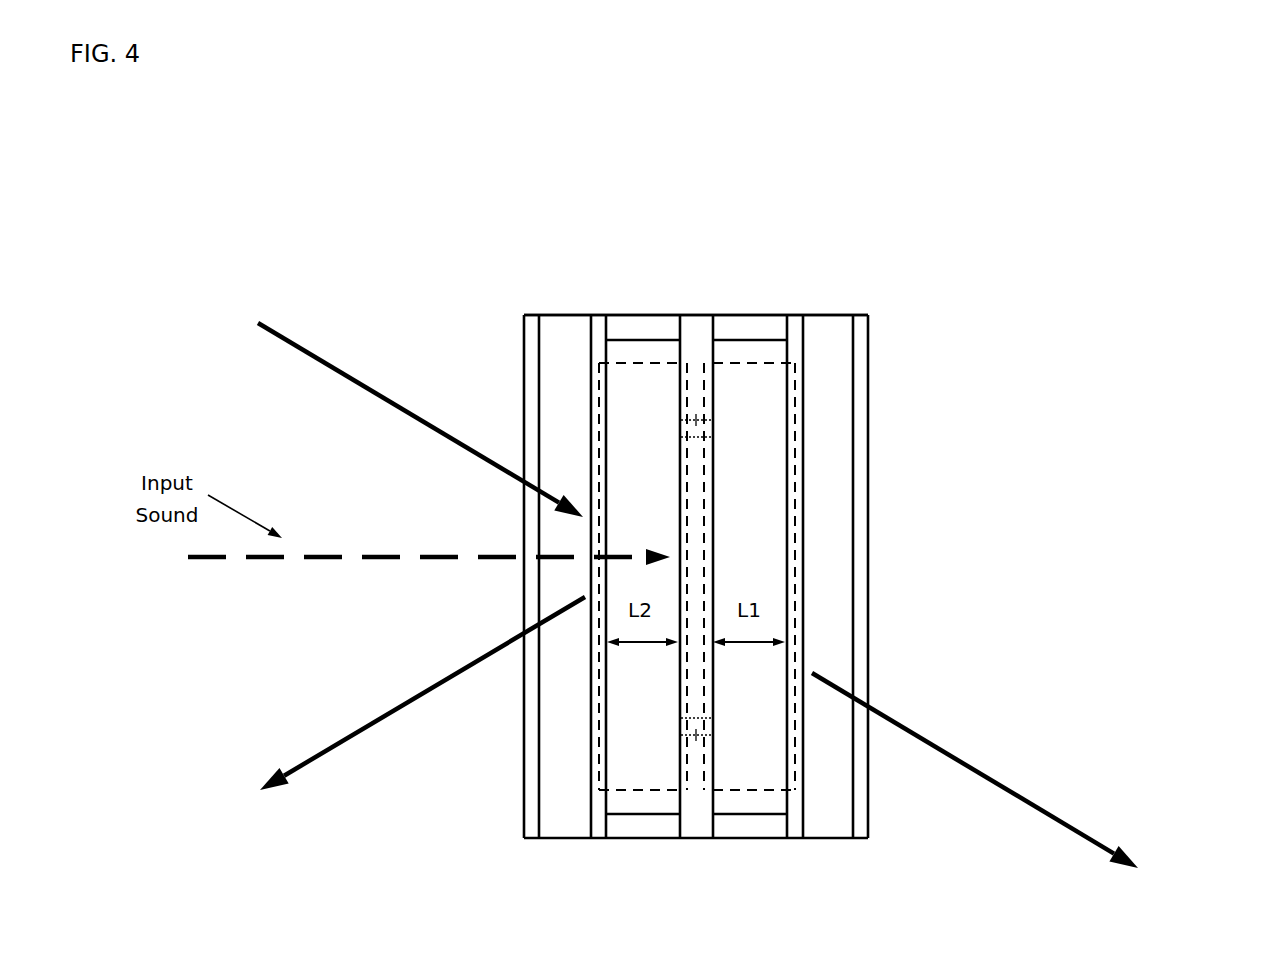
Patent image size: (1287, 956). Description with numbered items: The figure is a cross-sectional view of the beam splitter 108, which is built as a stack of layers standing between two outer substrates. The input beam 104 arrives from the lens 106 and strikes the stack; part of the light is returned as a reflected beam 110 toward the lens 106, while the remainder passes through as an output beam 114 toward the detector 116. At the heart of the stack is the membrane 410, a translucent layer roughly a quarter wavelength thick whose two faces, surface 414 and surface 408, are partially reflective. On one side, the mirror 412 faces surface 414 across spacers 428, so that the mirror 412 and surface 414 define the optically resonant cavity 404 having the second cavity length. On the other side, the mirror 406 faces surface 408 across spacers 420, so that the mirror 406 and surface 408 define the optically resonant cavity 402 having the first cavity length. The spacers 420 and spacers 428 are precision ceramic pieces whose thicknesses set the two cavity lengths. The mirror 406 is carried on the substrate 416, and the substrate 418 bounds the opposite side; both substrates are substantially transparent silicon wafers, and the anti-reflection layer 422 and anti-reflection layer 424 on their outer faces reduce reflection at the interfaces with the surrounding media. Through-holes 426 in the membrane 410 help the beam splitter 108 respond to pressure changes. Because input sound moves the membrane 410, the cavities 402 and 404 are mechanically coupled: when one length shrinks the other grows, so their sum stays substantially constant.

The input beam 104 is at (374, 420).
The lens 106 is at (228, 543).
The beam splitter 108 is at (439, 175).
The reflected beam 110 is at (374, 693).
The output beam 114 is at (975, 770).
The detector 116 is at (1195, 880).
The optically resonant cavity 402 is at (831, 553).
The optically resonant cavity 404 is at (562, 551).
The mirror 406 is at (859, 604).
The surface of membrane 408 is at (831, 576).
The membrane 410 is at (818, 576).
The mirror 412 is at (533, 604).
The surface of membrane 414 is at (562, 576).
The substrate 416 is at (896, 576).
The substrate 418 is at (496, 576).
The spacers 420 is at (732, 579).
The anti-reflection layer 422 is at (911, 585).
The anti-reflection layer 424 is at (479, 584).
The through-holes 426 is at (815, 487).
The spacers 428 is at (619, 579).